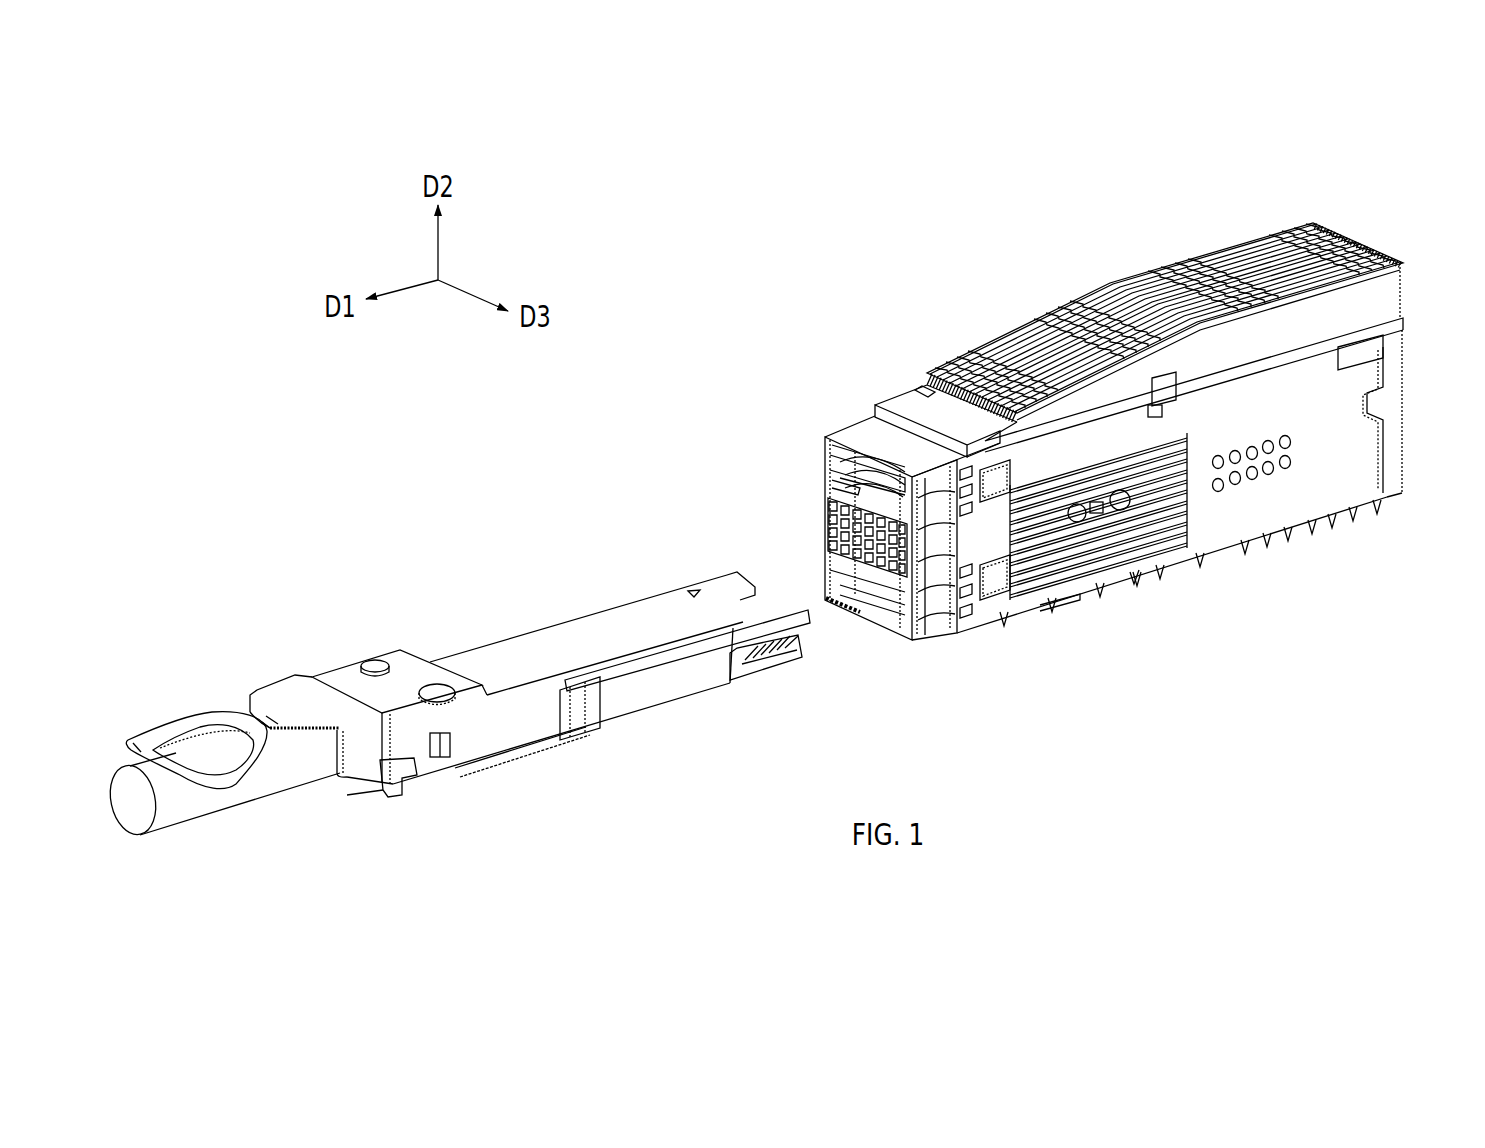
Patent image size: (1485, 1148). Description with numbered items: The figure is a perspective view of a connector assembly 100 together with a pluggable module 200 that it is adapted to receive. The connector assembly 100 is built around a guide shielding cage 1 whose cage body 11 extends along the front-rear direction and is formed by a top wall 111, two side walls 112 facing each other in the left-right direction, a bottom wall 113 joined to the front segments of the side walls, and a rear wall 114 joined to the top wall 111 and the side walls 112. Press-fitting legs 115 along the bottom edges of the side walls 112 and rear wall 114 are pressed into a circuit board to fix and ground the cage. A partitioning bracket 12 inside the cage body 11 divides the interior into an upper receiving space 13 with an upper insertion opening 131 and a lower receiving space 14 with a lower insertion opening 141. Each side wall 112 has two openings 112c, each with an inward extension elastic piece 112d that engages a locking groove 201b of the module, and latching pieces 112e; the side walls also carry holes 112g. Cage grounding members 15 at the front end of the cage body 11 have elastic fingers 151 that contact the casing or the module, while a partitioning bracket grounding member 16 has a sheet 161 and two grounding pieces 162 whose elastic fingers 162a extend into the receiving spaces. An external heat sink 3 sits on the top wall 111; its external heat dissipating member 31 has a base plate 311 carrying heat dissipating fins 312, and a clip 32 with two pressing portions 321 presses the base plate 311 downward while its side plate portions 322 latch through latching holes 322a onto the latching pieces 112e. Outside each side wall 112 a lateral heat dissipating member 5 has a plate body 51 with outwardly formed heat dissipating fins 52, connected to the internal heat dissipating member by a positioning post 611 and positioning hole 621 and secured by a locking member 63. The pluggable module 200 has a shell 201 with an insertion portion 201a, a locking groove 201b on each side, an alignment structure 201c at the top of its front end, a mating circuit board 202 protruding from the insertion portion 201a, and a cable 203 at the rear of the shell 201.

The connector assembly 100 is at (1163, 232).
The guide shielding cage 1 is at (1222, 560).
The external heat sink 3 is at (1082, 276).
The external heat dissipating member 31 is at (1075, 297).
The heat dissipating fins 312 is at (1134, 277).
The pressing portions 321 is at (937, 398).
The clip 32 is at (908, 412).
The side plate portions 322 is at (1103, 423).
The latching holes 322a is at (1137, 402).
The base plate 311 is at (910, 378).
The top wall 111 is at (882, 412).
The cage body 11 is at (1197, 562).
The side walls 112 is at (1338, 488).
The openings 112c is at (1015, 565).
The inward extension elastic piece 112d is at (992, 587).
The latching pieces 112e is at (1158, 412).
The side wall holes 112g is at (1283, 436).
The bottom wall 113 is at (1077, 596).
The rear wall 114 is at (1407, 407).
The press-fitting legs 115 is at (1292, 540).
The partitioning bracket 12 is at (900, 477).
The upper receiving space 13 is at (827, 500).
The upper insertion opening 131 is at (837, 465).
The lower receiving space 14 is at (838, 563).
The lower insertion opening 141 is at (825, 543).
The partitioning bracket grounding member 16 is at (825, 500).
The sheet 161 is at (827, 510).
The grounding pieces 162 is at (730, 456).
The elastic fingers 162a is at (833, 460).
The cage grounding members 15 is at (943, 632).
The elastic fingers 151 is at (898, 606).
The lateral heat dissipating members 5 is at (1143, 574).
The plate body 51 is at (1187, 511).
The heat dissipating fins 52 is at (1177, 525).
The locking member 63 is at (1077, 505).
The positioning post 611 is at (1137, 574).
The positioning hole 621 is at (1097, 515).
The pluggable module 200 is at (492, 630).
The shell 201 is at (387, 650).
The insertion portion 201a is at (543, 650).
The locking groove 201b is at (573, 713).
The alignment structure 201c is at (733, 612).
The mating circuit board 202 is at (783, 655).
The cable 203 is at (290, 770).